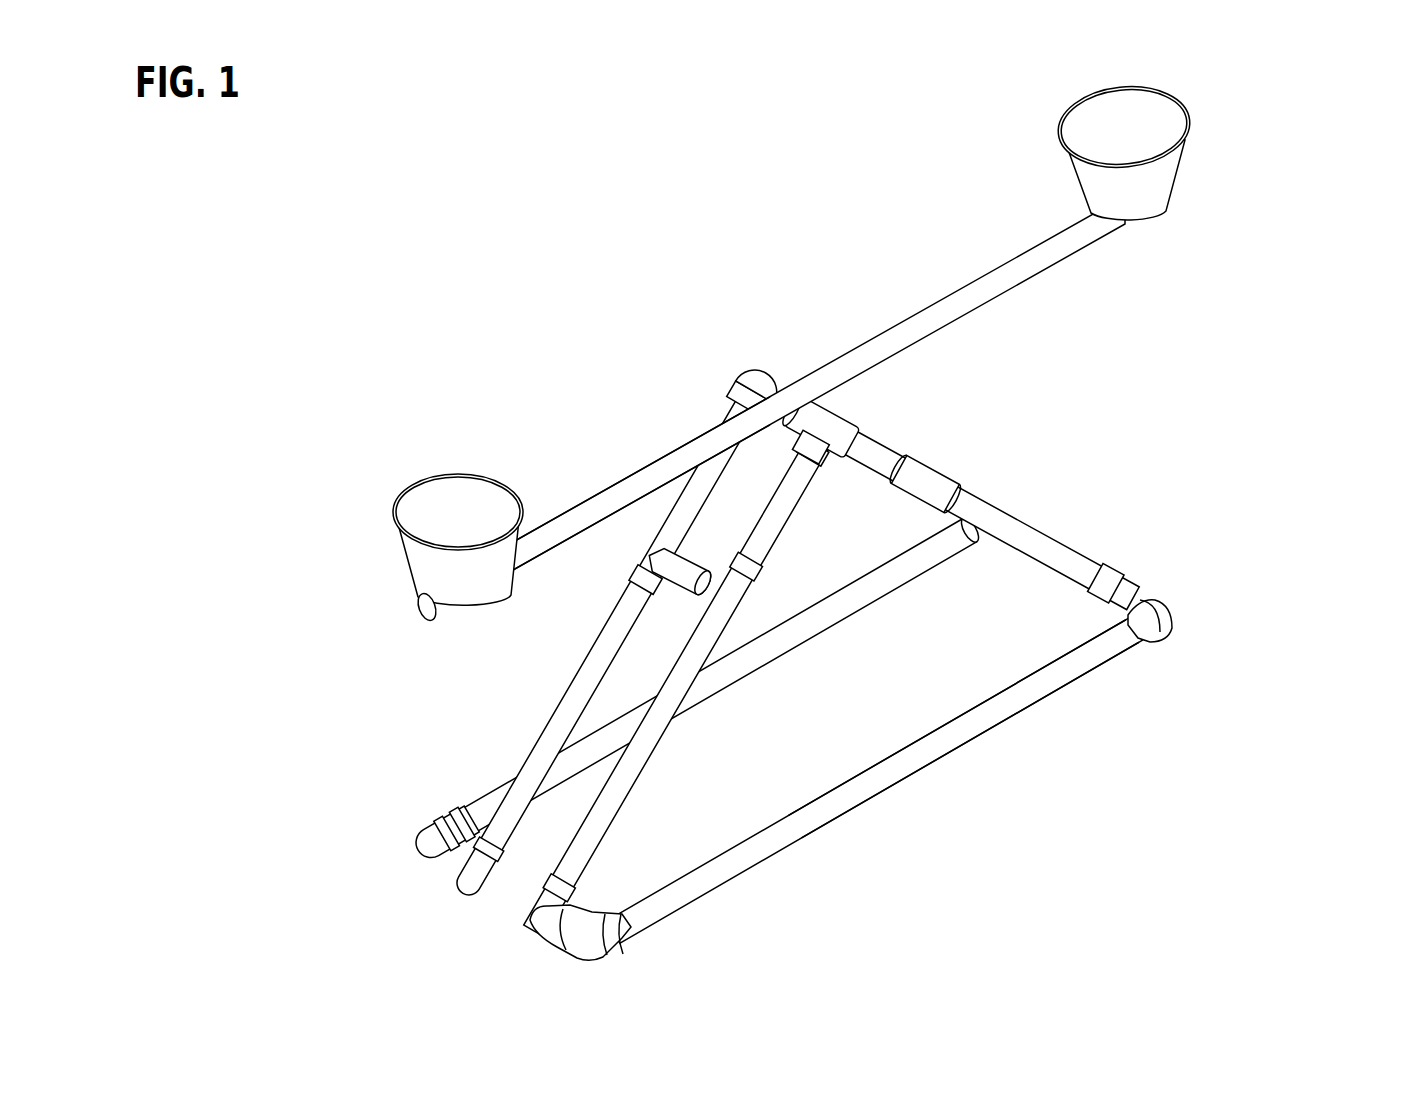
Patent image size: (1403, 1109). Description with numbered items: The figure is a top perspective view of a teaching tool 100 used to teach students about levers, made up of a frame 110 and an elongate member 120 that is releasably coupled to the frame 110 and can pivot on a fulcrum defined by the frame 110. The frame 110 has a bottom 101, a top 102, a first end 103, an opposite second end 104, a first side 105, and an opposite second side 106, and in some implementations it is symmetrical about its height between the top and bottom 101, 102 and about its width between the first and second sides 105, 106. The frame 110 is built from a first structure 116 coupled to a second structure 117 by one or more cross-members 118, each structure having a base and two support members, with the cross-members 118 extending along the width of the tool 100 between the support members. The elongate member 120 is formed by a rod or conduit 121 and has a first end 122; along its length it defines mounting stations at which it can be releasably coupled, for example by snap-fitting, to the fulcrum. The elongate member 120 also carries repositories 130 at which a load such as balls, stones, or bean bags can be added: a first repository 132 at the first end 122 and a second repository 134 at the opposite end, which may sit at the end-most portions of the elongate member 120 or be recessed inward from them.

The teaching tool 100 is at (518, 305).
The bottom 101 is at (919, 791).
The top 102 is at (726, 347).
The first end 103 is at (485, 917).
The second end 104 is at (1104, 538).
The first side 105 is at (997, 756).
The second side 106 is at (841, 565).
The frame 110 is at (1071, 707).
The first structure 116 is at (1121, 652).
The second structure 117 is at (463, 810).
The cross-members 118 is at (693, 570).
The elongate member 120 is at (851, 324).
The rod or conduit 121 is at (676, 450).
The first end 122 is at (426, 620).
The repositories 130 is at (814, 380).
The first repository 132 is at (421, 551).
The second repository 134 is at (1178, 170).